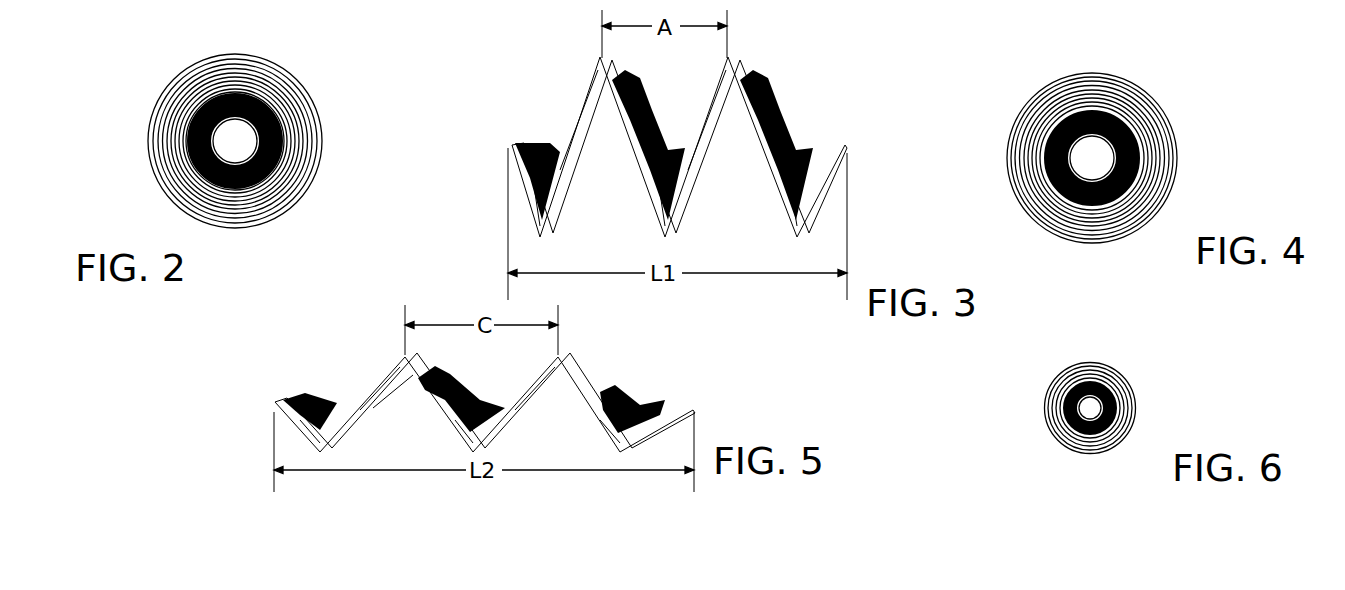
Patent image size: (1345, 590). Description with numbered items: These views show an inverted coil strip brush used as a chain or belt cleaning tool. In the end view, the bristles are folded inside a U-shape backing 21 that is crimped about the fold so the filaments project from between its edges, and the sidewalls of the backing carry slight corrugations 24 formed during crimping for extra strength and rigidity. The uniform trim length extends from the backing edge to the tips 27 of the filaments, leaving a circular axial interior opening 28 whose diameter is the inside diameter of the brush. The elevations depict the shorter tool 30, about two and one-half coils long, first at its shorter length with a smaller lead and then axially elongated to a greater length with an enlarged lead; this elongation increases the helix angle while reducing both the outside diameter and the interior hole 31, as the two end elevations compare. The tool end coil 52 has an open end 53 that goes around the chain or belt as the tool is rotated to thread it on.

In FIG. 2, the U-shape backing 21 is at (337, 123).
In FIG. 2, the corrugation 24 is at (293, 93).
In FIG. 2, the tips of the filaments 27 is at (205, 103).
In FIG. 2, the circular axial interior opening 28 is at (200, 172).
In FIG. 3, the tool 30 is at (780, 93).
In FIG. 5, the tool 30 is at (600, 362).
In FIG. 4, the tool 30 is at (1170, 117).
In FIG. 6, the tool 30 is at (1140, 413).
In FIG. 4, the hole 31 is at (1117, 127).
In FIG. 6, the hole 31 is at (1120, 382).
In FIG. 3, the tool end coil 52 is at (813, 220).
In FIG. 4, the tool end coil 52 is at (1163, 160).
In FIG. 6, the tool end coil 52 is at (1100, 365).
In FIG. 3, the open end 53 is at (800, 135).